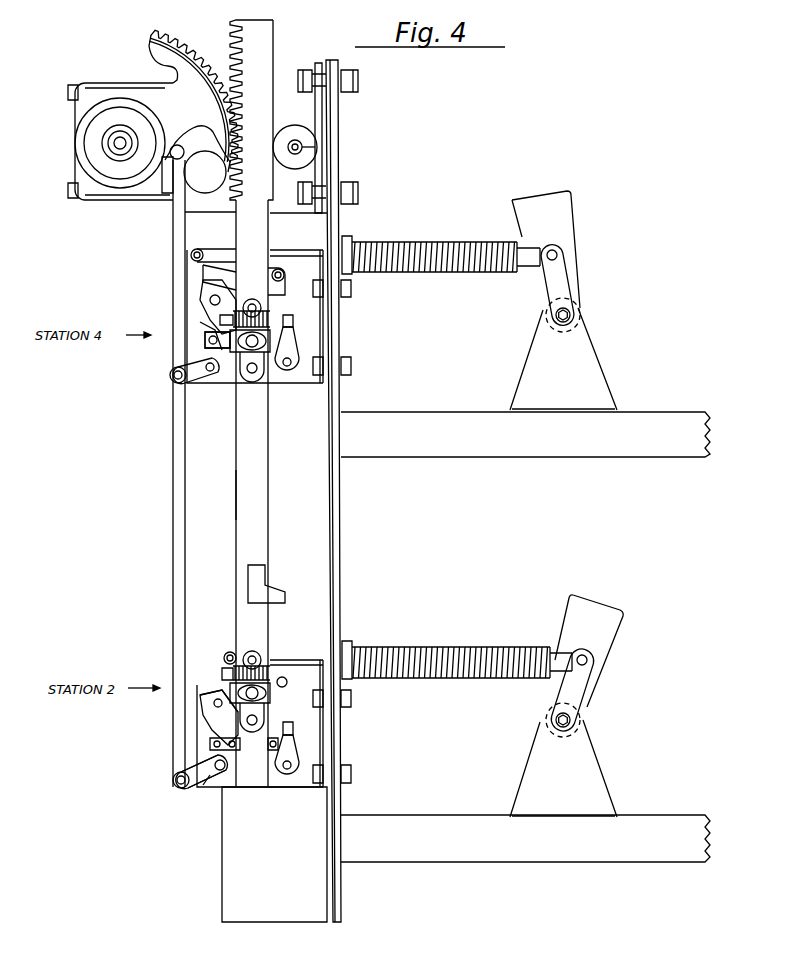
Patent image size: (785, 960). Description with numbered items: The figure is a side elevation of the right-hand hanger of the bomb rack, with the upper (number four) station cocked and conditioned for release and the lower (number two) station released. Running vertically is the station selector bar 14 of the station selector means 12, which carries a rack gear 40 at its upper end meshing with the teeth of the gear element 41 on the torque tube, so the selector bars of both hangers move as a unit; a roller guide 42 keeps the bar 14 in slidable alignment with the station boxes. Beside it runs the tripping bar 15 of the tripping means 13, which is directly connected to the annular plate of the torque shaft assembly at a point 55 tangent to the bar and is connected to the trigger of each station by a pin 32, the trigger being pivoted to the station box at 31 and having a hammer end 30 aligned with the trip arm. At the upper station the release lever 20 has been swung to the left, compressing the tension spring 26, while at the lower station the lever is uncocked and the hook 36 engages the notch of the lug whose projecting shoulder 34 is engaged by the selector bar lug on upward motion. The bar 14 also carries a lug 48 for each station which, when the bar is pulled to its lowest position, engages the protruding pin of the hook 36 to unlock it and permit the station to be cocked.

The station selector means 12 is at (234, 492).
The tripping means 13 is at (175, 634).
The station selector bar 14 is at (240, 530).
The tripping bar 15 is at (175, 446).
The release lever 20 is at (569, 243).
The tension spring 26 is at (378, 242).
The hammer end 30 is at (205, 742).
The trigger pivot 31 is at (205, 785).
The pin 32 is at (178, 782).
The projecting shoulder 34 is at (205, 730).
The hook 36 is at (222, 672).
The rack gear 40 is at (232, 26).
The gear element 41 is at (172, 46).
The roller guide 42 is at (322, 158).
The lug 48 is at (268, 592).
The connection point 55 is at (192, 185).